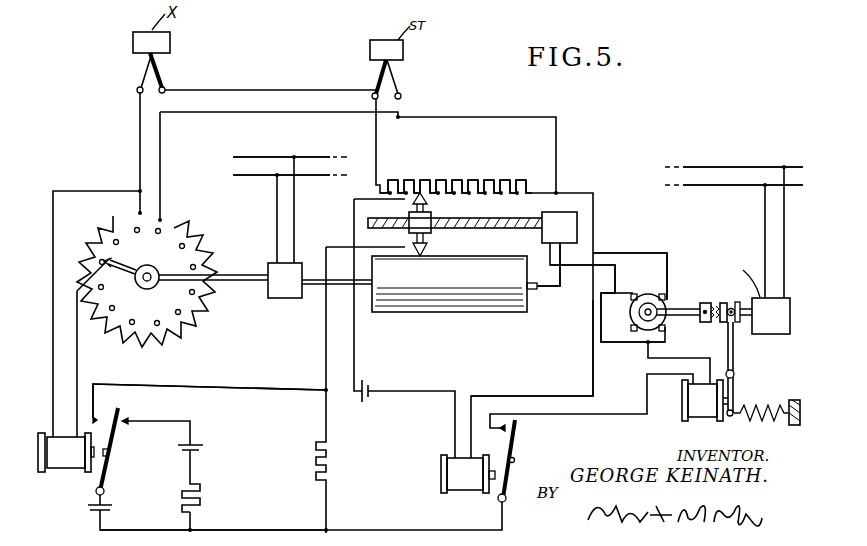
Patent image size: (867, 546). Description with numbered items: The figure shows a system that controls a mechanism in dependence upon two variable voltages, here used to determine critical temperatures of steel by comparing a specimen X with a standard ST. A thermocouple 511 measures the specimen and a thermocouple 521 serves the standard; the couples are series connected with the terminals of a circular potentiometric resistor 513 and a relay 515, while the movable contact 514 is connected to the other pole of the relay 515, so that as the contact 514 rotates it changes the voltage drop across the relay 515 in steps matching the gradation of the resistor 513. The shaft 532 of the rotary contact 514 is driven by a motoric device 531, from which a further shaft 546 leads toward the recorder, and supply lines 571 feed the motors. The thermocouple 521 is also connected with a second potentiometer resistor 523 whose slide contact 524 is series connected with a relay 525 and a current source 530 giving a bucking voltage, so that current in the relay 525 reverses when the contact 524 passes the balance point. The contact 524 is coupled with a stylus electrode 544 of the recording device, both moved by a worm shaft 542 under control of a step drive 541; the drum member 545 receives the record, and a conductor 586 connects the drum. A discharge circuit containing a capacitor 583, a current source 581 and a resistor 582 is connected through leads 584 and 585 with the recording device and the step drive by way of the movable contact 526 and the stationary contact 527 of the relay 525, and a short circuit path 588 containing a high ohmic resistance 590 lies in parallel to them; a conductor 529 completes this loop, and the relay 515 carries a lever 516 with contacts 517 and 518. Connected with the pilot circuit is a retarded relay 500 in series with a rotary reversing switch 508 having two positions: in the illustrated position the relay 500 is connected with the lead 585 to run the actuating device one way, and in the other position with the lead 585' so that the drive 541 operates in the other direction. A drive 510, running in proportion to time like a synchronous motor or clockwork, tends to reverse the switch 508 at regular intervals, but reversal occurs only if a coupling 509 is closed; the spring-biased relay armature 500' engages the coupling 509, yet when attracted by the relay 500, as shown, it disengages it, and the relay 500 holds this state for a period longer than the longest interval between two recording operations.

The thermocouple 511 is at (146, 68).
The thermocouple 521 is at (392, 70).
The power supply lines 571 is at (234, 170).
The potentiometer resistor 523 is at (478, 180).
The slide contact 524 is at (429, 204).
The worm shaft 542 is at (484, 222).
The step drive 541 is at (580, 222).
The stylus electrode 544 is at (425, 252).
The drum member 545 is at (451, 298).
The conductor 586 is at (553, 290).
The potentiometric resistor 513 is at (185, 226).
The movable contact 514 is at (105, 257).
The shaft 532 is at (222, 271).
The motoric device 531 is at (297, 263).
The shaft 546 is at (306, 289).
The lead 585 is at (607, 285).
The lead 585' is at (650, 264).
The rotary reversing switch 508 is at (648, 294).
The coupling 509 is at (712, 303).
The drive 510 is at (777, 333).
The relay armature 500' is at (763, 363).
The relay 500 is at (683, 409).
The conductor 529 is at (590, 366).
The current source 530 is at (367, 402).
The short circuit path 588 is at (326, 409).
The high ohmic resistance 590 is at (337, 489).
The relay 525 is at (447, 477).
The movable contact 526 is at (503, 494).
The stationary contact 527 is at (518, 430).
The relay 515 is at (58, 459).
The lever 516 is at (114, 470).
The contact 517 is at (121, 424).
The contact 518 is at (99, 416).
The current source 581 is at (204, 453).
The resistor 582 is at (203, 500).
The capacitor 583 is at (88, 509).
The lead 584 is at (298, 530).